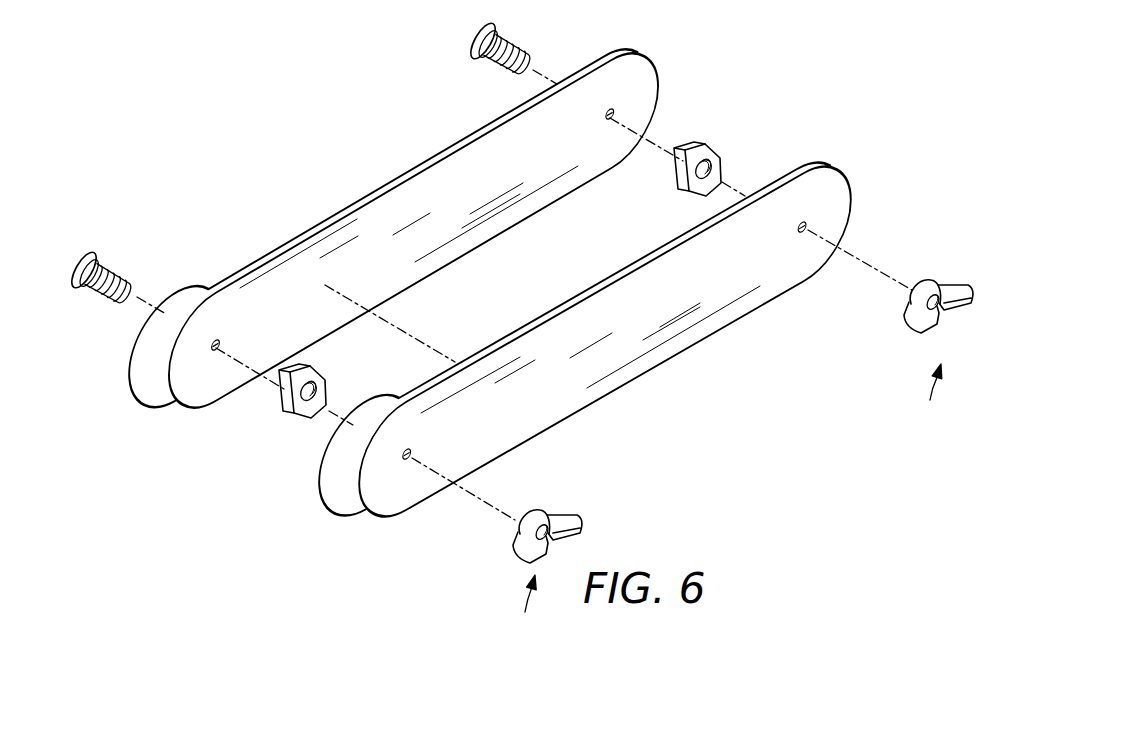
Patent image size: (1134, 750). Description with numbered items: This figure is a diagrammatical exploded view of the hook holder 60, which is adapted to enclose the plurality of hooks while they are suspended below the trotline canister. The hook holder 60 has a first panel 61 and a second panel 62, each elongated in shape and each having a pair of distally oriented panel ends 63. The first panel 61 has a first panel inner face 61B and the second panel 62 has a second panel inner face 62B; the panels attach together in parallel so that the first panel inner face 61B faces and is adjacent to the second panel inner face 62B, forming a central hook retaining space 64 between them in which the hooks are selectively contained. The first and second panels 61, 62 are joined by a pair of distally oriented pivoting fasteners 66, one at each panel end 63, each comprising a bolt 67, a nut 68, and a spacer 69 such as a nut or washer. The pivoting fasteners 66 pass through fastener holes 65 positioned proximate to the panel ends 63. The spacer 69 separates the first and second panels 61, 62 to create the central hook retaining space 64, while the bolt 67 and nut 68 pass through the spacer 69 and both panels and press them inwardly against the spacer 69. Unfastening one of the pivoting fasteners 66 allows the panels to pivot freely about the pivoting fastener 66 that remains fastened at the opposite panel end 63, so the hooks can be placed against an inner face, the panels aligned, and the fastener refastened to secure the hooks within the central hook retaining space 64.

The hook holder 60 is at (790, 88).
The first panel 61 is at (303, 240).
The first panel inner face 61B is at (373, 263).
The second panel 62 is at (601, 404).
The second panel inner face 62B is at (542, 312).
The panel ends 63 is at (655, 112).
The central hook retaining space 64 is at (408, 335).
The fastener holes 65 is at (613, 105).
The pivoting fasteners 66 is at (723, 501).
The bolt 67 is at (505, 43).
The nut 68 is at (570, 512).
The spacer 69 is at (717, 148).